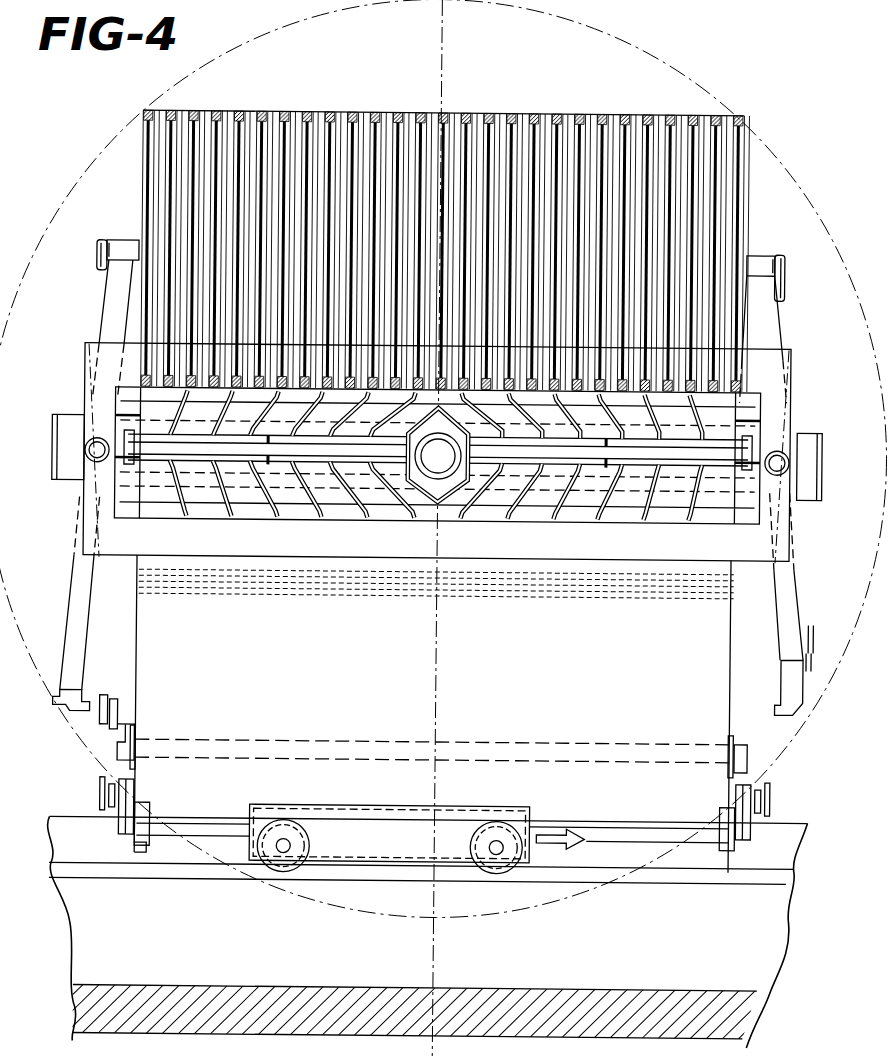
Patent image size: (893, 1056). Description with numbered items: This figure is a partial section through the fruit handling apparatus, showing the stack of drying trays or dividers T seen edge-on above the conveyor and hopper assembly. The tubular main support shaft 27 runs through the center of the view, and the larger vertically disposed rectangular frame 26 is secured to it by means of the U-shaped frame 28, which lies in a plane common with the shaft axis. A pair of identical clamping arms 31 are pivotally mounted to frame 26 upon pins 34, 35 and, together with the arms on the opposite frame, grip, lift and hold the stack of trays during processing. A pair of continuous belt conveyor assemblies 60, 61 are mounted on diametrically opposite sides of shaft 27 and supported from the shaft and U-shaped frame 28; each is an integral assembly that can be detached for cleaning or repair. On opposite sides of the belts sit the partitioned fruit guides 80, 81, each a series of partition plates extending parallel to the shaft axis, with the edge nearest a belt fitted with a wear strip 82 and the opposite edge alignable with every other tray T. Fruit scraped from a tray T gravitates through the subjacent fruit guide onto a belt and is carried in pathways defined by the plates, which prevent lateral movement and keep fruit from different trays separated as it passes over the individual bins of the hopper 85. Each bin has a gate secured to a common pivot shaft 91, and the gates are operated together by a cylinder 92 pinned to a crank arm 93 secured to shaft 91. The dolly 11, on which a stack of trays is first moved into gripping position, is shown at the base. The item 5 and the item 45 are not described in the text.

The tray or divider T is at (320, 128).
The heat exchanger assembly 5 is at (512, 104).
The dolly 11 is at (508, 806).
The rectangular frame 26 is at (276, 560).
The tubular main support shaft 27 is at (437, 490).
The U-shaped frame 28 is at (70, 420).
The clamping arm 31 is at (103, 308).
The pin 34 is at (779, 456).
The pin 35 is at (95, 460).
The arm foot 45 is at (72, 700).
The continuous belt conveyor assembly 60 is at (232, 475).
The continuous belt conveyor assembly 61 is at (683, 485).
The partitioned fruit guide 80 is at (700, 400).
The partitioned fruit guide 81 is at (497, 525).
The wear strip 82 is at (636, 488).
The hopper 85 is at (572, 702).
The common pivot shaft 91 is at (258, 748).
The cylinder 92 is at (116, 812).
The crank arm 93 is at (130, 705).